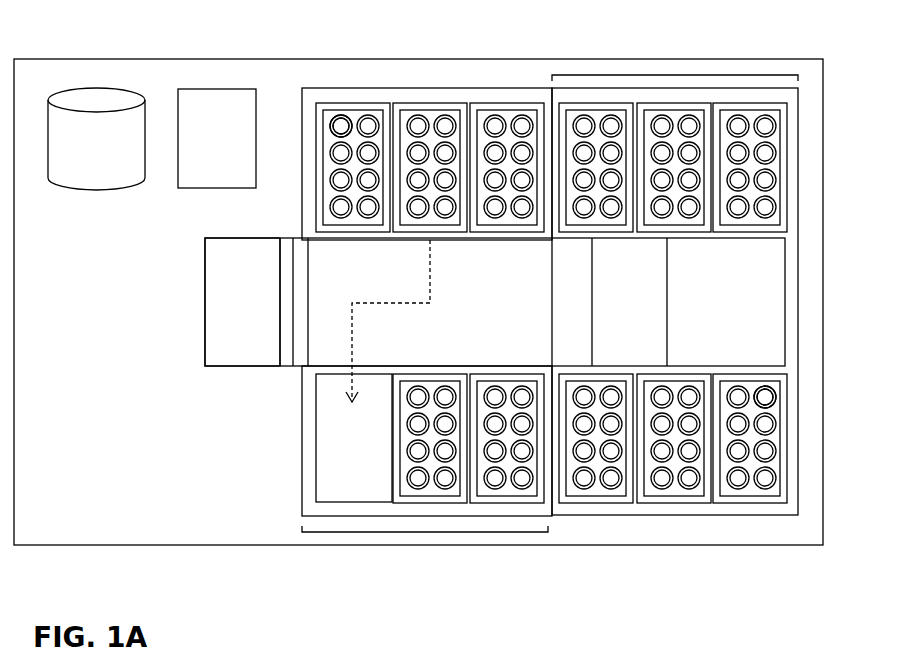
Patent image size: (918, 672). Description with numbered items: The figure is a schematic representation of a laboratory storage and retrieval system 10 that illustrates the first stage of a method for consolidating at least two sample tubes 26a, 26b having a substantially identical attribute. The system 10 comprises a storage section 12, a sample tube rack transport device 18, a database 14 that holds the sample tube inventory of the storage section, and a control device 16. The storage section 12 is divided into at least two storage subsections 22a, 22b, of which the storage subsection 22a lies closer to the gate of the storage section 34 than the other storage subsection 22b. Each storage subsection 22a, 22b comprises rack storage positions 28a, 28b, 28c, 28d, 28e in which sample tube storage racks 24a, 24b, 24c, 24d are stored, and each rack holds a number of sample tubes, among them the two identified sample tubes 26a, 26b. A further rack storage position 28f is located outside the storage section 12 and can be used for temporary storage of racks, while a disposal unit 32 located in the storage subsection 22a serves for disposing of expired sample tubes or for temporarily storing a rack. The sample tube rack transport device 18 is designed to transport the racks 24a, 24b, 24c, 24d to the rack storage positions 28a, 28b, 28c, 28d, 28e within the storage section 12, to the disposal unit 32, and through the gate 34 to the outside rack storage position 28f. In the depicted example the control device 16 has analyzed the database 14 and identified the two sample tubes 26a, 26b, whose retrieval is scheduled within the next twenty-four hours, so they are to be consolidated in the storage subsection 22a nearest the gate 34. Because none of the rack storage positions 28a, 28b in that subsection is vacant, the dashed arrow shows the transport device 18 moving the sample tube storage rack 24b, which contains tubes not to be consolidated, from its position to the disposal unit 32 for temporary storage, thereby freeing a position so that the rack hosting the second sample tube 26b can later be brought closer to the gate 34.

The laboratory storage and retrieval system 10 is at (802, 56).
The storage section 12 is at (510, 87).
The database 14 is at (95, 145).
The control device 16 is at (217, 135).
The sample tube rack transport device 18 is at (635, 300).
The storage subsection 22a is at (422, 532).
The storage subsection 22b is at (679, 75).
The sample tube storage rack 24a is at (353, 117).
The sample tube storage rack 24b is at (432, 112).
The sample tube storage rack 24c is at (673, 488).
The sample tube storage rack 24d is at (747, 488).
The sample tube 26a is at (340, 125).
The sample tube 26b is at (765, 397).
The rack storage position 28a is at (337, 107).
The rack storage position 28b is at (458, 105).
The rack storage position 28c is at (655, 497).
The rack storage position 28d is at (767, 497).
The rack holder 28e is at (540, 478).
The rack storage position 28f is at (205, 322).
The disposal unit 32 is at (324, 397).
The gate of the storage section 34 is at (300, 303).